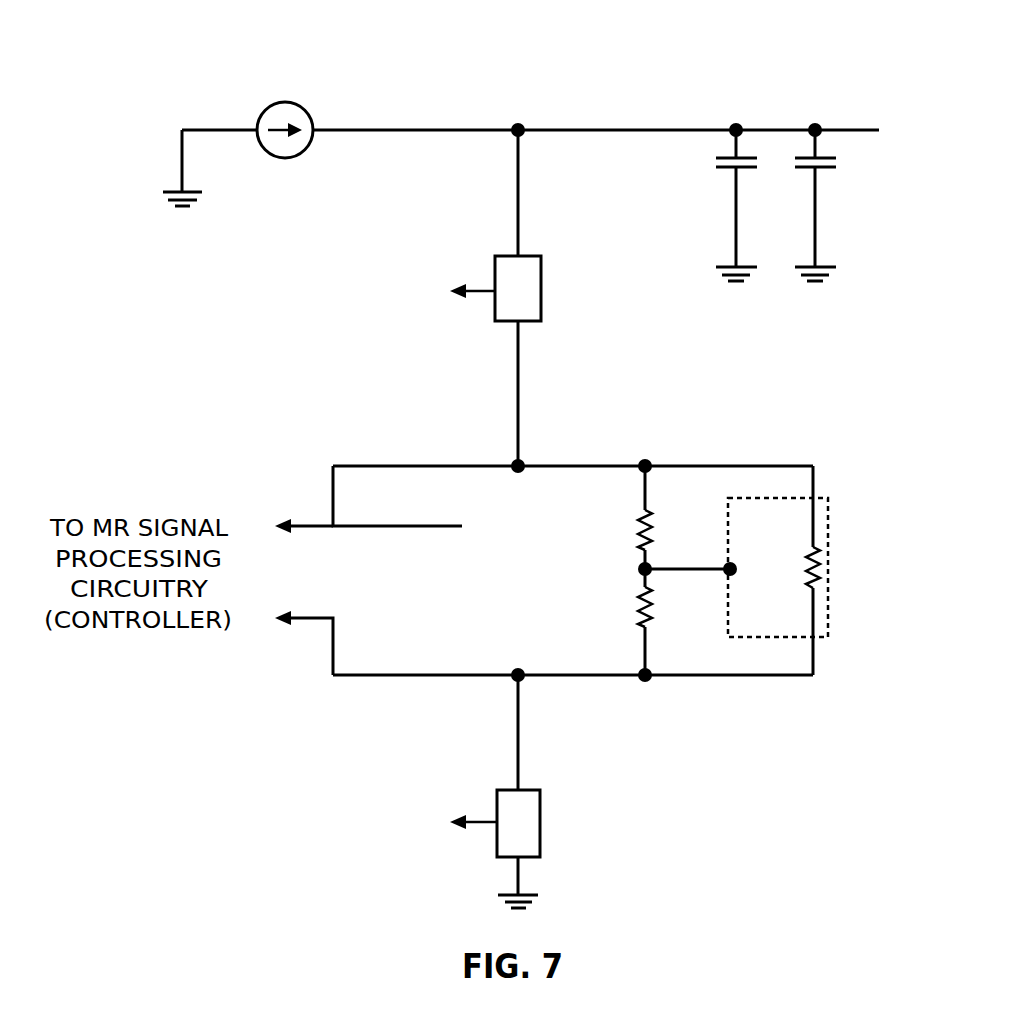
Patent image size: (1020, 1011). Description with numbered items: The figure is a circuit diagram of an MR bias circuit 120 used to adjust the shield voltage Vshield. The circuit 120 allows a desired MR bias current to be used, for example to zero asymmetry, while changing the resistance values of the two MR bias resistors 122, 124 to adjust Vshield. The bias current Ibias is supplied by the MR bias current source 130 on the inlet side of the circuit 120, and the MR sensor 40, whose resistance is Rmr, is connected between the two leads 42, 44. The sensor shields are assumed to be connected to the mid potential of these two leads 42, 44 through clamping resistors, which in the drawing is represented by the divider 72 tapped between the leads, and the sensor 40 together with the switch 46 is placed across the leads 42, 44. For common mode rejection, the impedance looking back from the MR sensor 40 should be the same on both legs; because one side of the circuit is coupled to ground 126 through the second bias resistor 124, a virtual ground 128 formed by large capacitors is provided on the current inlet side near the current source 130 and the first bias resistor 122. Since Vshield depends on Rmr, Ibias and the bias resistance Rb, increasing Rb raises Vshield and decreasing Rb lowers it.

The MR bias circuit 120 is at (172, 78).
The MR bias current source 130 is at (260, 115).
The virtual ground 128 is at (864, 170).
The MR bias resistor 122 is at (568, 243).
The MR bias resistor 124 is at (568, 808).
The ground 126 is at (518, 893).
The lead 44 is at (697, 465).
The lead 42 is at (690, 677).
The resistor divider 72 is at (620, 562).
The MR sensor 40 is at (826, 572).
The switch S1 46 is at (762, 638).